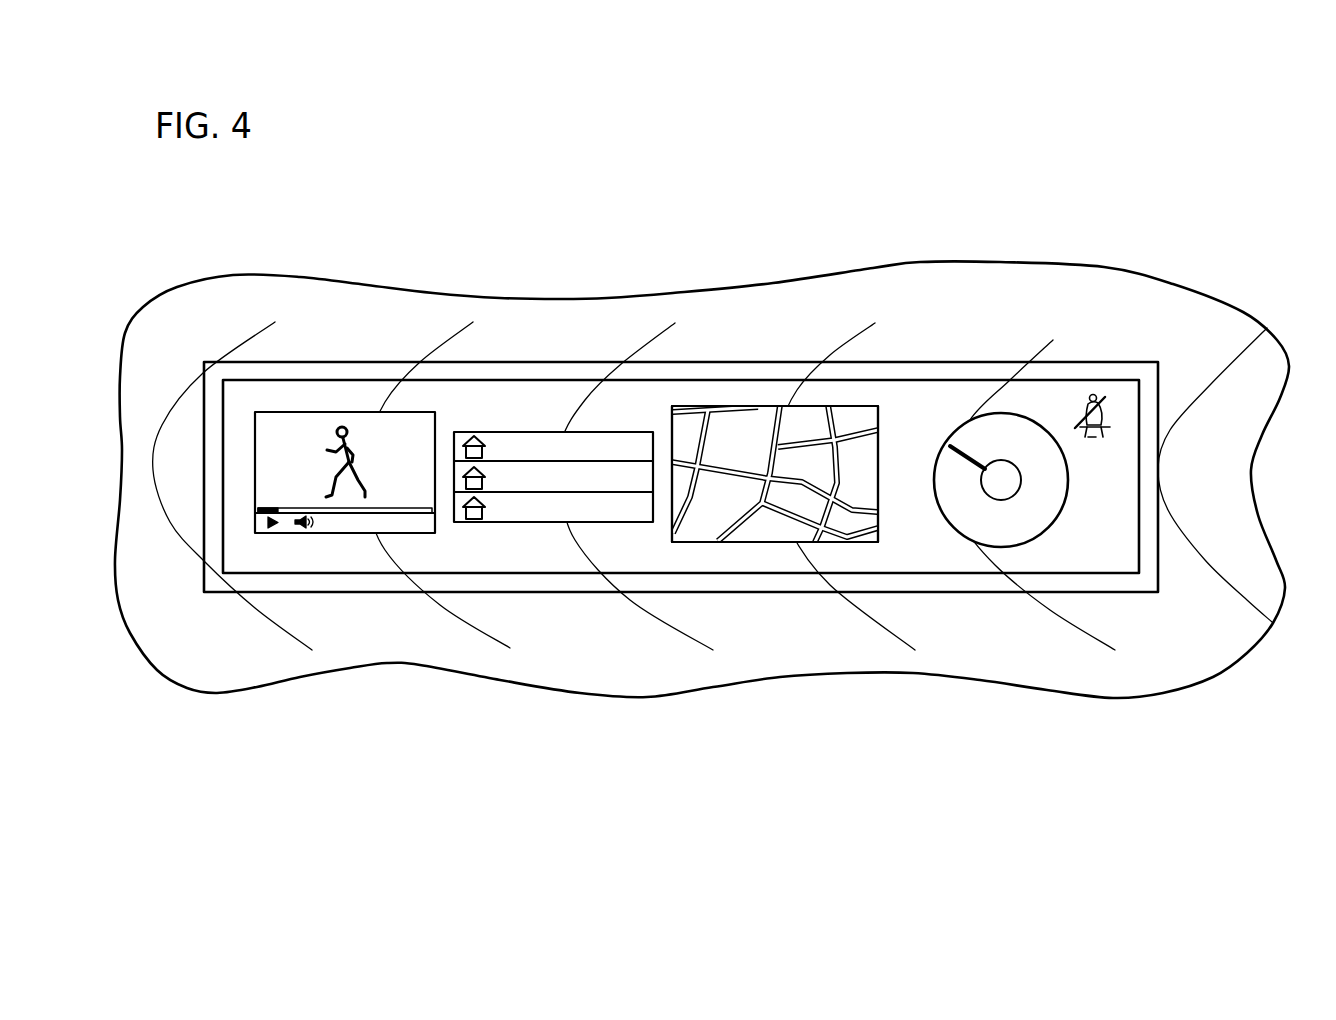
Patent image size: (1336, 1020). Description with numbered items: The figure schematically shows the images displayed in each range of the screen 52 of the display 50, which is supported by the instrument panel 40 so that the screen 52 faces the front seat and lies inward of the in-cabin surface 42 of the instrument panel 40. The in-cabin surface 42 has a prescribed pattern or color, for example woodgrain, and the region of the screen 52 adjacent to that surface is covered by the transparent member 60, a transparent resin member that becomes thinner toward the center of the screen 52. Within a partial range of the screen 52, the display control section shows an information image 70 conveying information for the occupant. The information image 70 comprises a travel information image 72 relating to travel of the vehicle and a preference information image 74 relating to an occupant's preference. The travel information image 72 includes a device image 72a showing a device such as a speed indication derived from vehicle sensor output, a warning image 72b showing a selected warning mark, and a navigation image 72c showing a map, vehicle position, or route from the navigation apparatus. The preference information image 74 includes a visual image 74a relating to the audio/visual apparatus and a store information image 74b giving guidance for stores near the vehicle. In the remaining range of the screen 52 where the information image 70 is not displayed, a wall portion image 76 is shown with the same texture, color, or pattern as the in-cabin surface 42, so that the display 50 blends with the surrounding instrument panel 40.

The instrument panel 40 is at (749, 698).
The in-cabin surface 42 is at (165, 628).
The display 50 is at (681, 396).
The screen 52 is at (457, 552).
The transparent member 60 is at (352, 582).
The information image 70 is at (686, 335).
The travel information image 72 is at (894, 358).
The device image 72a is at (1006, 415).
The warning image 72b is at (1088, 326).
The navigation image 72c is at (843, 407).
The preference information image 74 is at (454, 351).
The visual image 74a is at (345, 413).
The store information image 74b is at (520, 432).
The wall portion image 76 is at (650, 533).